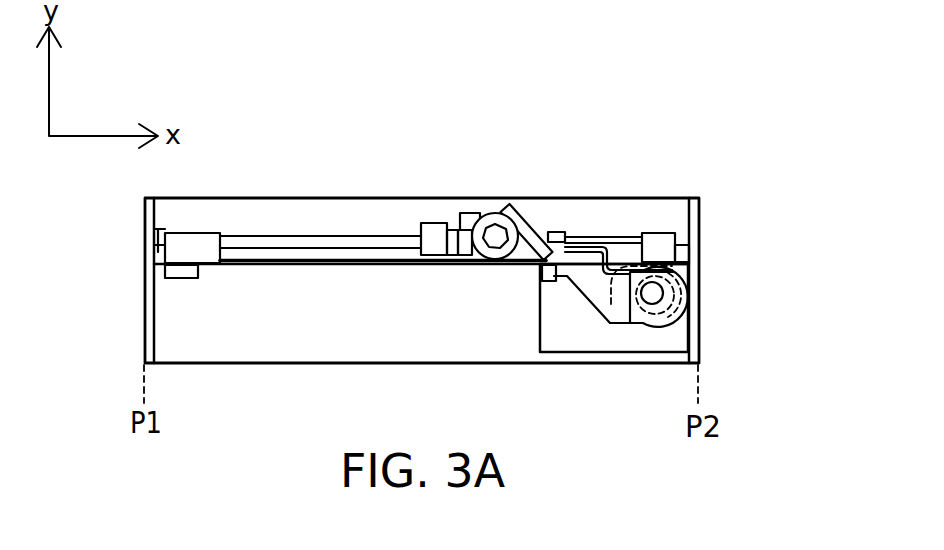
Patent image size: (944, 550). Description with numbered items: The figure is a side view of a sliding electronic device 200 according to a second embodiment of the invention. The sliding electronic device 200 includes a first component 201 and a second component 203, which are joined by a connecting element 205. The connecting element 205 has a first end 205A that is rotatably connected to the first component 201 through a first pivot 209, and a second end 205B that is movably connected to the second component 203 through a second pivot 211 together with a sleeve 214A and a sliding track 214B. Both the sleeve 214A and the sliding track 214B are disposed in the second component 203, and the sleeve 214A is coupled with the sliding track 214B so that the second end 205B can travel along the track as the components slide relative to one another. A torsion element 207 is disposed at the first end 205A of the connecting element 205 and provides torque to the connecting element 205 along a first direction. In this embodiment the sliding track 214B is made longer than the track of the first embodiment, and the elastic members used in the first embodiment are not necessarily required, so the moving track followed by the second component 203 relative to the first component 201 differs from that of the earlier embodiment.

The sliding electronic device 200 is at (717, 153).
The first component 201 is at (250, 364).
The second component 203 is at (271, 197).
The connecting element 205 is at (558, 275).
The first end 205A is at (648, 325).
The second end 205B is at (488, 264).
The torsion element 207 is at (684, 314).
The first pivot 209 is at (654, 293).
The second pivot 211 is at (488, 234).
The sleeve 214A is at (436, 223).
The sliding track 214B is at (362, 242).